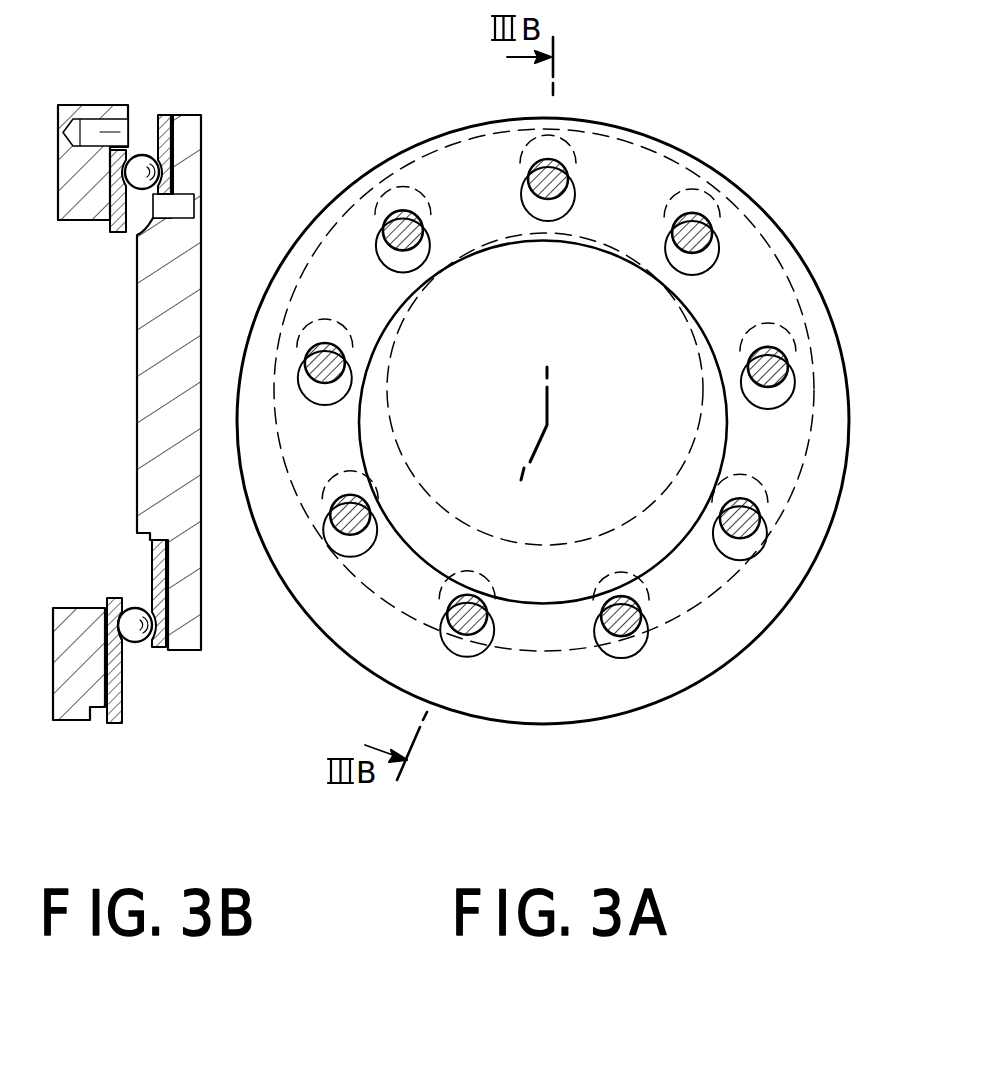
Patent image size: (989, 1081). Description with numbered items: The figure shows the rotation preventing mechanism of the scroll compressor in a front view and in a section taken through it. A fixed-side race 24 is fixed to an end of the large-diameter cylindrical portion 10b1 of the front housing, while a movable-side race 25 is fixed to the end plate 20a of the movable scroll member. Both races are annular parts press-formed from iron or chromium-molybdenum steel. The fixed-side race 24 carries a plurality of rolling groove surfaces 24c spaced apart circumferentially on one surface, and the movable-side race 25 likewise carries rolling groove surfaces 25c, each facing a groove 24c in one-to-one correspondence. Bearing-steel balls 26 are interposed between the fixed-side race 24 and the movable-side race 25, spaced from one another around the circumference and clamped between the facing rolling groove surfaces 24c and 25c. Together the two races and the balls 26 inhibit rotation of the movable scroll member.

In FIG. 3B, the large-diameter cylindrical portion 10b1 is at (72, 720).
In FIG. 3B, the end plate 20a is at (180, 652).
In FIG. 3A, the fixed-side race 24 is at (750, 197).
In FIG. 3B, the fixed-side race 24 is at (112, 723).
In FIG. 3A, the rolling groove surfaces 24c is at (783, 323).
In FIG. 3B, the rolling groove surfaces 24c is at (134, 647).
In FIG. 3A, the movable-side race 25 is at (793, 236).
In FIG. 3B, the movable-side race 25 is at (153, 650).
In FIG. 3A, the rolling groove surfaces 25c is at (793, 386).
In FIG. 3B, the rolling groove surfaces 25c is at (153, 592).
In FIG. 3A, the balls 26 is at (784, 355).
In FIG. 3B, the balls 26 is at (143, 155).